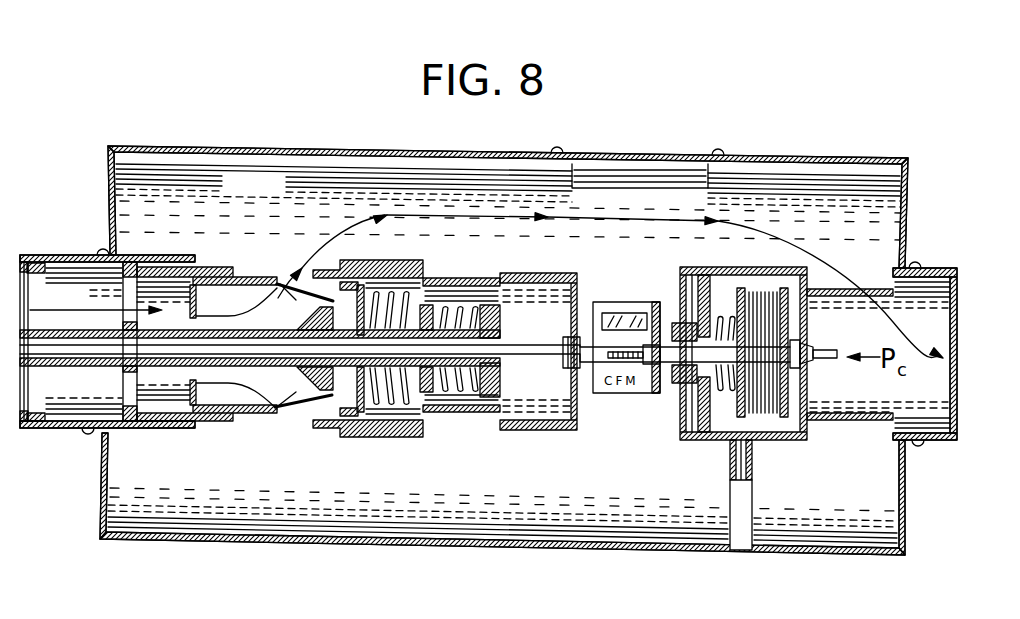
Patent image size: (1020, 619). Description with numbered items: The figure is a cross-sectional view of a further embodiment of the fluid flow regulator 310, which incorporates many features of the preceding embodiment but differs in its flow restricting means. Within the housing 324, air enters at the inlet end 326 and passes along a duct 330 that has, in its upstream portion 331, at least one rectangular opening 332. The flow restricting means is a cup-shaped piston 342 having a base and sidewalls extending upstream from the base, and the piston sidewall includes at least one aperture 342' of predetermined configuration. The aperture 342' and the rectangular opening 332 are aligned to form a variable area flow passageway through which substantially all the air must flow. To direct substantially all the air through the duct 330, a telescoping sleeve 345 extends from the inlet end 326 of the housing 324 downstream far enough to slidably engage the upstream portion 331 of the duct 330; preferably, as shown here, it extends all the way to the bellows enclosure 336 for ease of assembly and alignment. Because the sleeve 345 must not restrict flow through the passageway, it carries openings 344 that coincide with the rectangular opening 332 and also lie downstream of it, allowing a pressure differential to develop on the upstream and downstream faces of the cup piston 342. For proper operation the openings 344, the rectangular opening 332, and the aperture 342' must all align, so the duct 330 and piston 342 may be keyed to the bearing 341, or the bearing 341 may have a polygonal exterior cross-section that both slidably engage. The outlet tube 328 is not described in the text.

The flow regulator 310 is at (198, 135).
The housing 324 is at (297, 148).
The inlet end 326 is at (106, 245).
The outlet tube 328 is at (910, 245).
The upstream portion 331 is at (373, 208).
The duct 330 is at (170, 266).
The openings 344 is at (196, 260).
The bellows enclosure 336 is at (733, 268).
The bearing 341 is at (109, 359).
The telescoping sleeve 345 is at (154, 432).
The cup-shaped piston 342 is at (269, 397).
The aperture 342' is at (318, 401).
The rectangular opening 332 is at (306, 404).